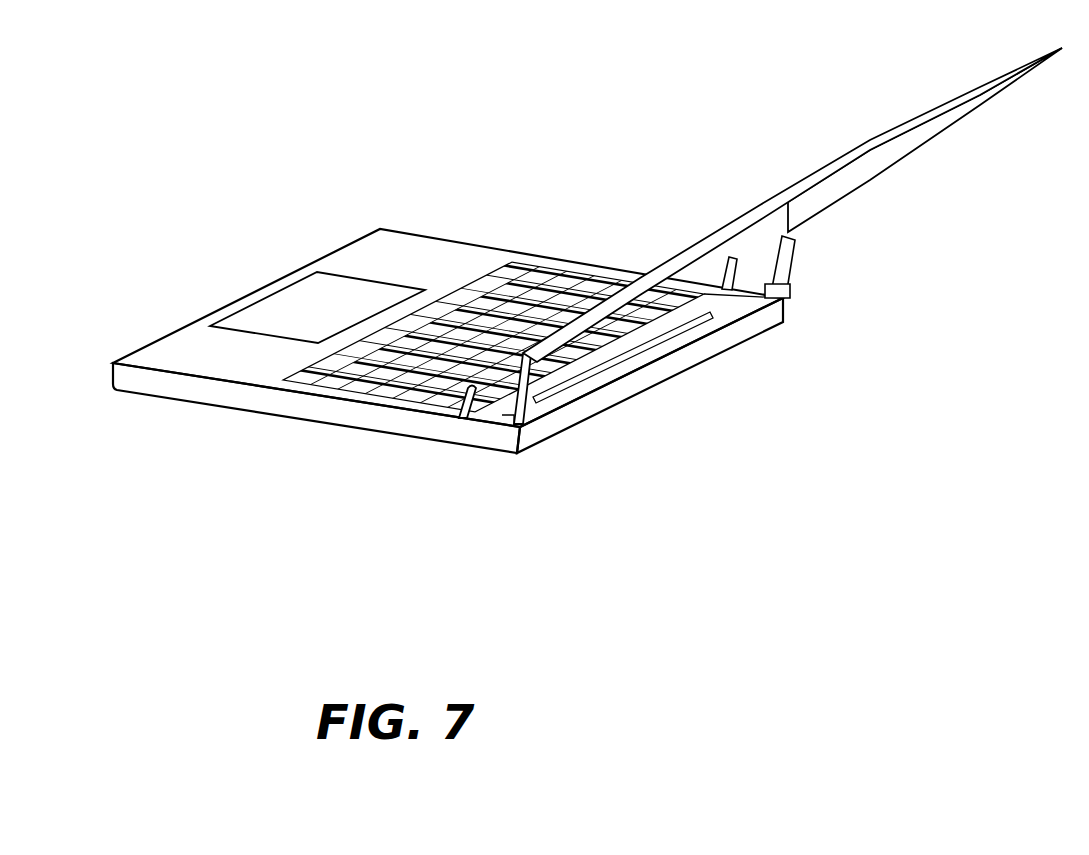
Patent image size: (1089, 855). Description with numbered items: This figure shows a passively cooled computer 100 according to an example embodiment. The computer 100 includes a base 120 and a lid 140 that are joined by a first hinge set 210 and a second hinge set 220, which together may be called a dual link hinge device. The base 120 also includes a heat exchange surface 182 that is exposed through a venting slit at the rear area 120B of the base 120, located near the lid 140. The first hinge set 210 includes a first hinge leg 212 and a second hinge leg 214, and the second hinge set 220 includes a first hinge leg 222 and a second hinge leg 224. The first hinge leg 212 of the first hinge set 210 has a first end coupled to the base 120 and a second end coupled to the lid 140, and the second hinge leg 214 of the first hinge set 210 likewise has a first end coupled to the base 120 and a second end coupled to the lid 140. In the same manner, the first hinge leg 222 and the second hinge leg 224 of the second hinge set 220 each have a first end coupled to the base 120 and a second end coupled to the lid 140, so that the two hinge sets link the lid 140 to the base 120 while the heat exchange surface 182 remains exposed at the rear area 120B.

The computer 100 is at (352, 130).
The base 120 is at (217, 395).
The rear area 120B is at (740, 308).
The lid 140 is at (930, 110).
The heat exchange surface 182 is at (622, 358).
The first hinge set 210 is at (508, 462).
The first hinge leg 212 is at (463, 415).
The second hinge leg 214 is at (518, 400).
The second hinge set 220 is at (813, 245).
The first hinge leg 222 is at (730, 272).
The second hinge leg 224 is at (788, 243).